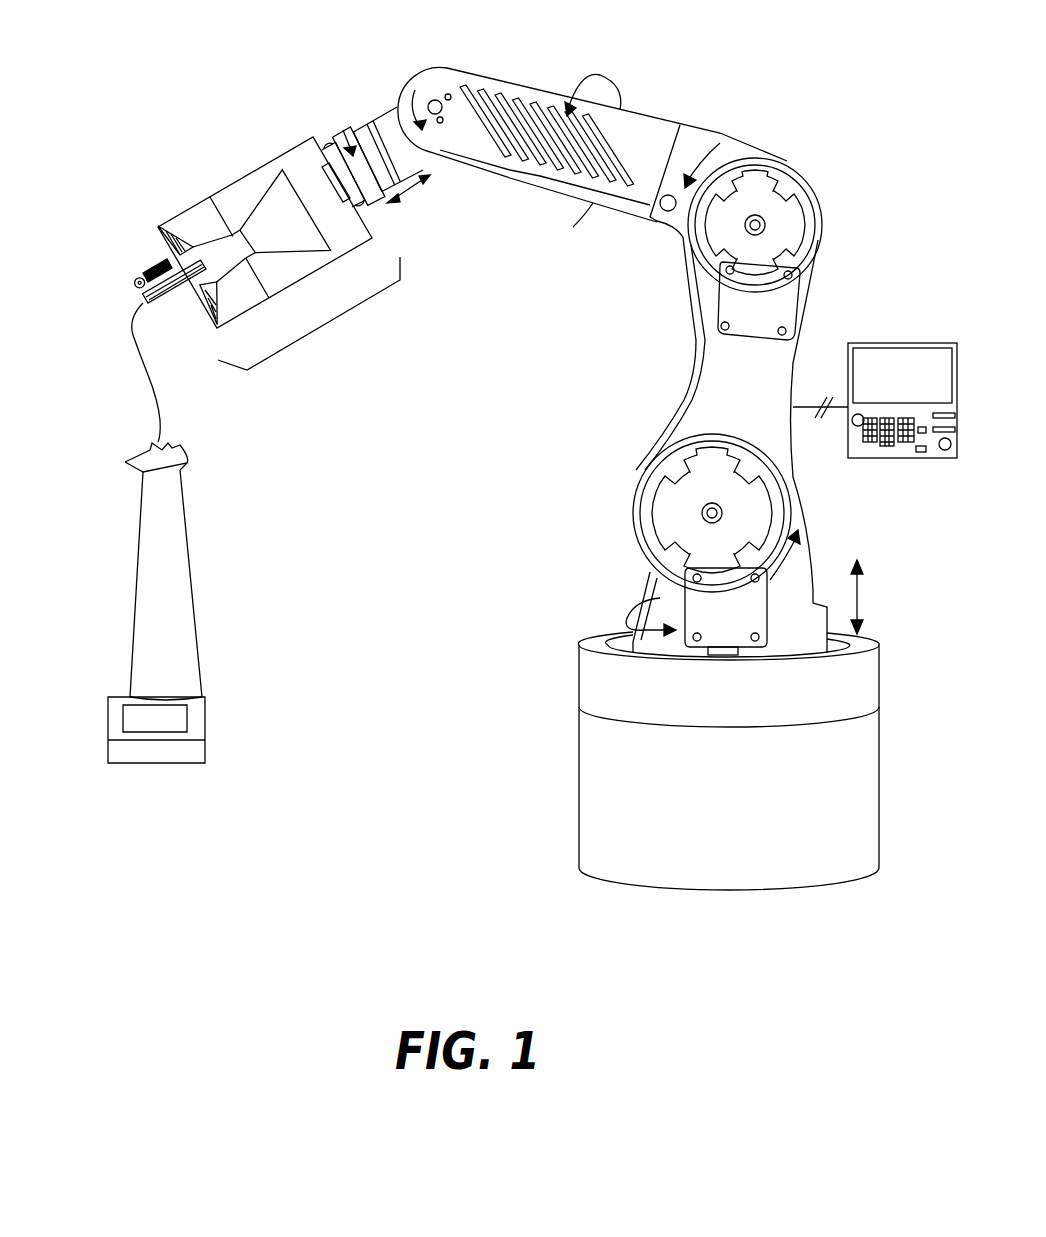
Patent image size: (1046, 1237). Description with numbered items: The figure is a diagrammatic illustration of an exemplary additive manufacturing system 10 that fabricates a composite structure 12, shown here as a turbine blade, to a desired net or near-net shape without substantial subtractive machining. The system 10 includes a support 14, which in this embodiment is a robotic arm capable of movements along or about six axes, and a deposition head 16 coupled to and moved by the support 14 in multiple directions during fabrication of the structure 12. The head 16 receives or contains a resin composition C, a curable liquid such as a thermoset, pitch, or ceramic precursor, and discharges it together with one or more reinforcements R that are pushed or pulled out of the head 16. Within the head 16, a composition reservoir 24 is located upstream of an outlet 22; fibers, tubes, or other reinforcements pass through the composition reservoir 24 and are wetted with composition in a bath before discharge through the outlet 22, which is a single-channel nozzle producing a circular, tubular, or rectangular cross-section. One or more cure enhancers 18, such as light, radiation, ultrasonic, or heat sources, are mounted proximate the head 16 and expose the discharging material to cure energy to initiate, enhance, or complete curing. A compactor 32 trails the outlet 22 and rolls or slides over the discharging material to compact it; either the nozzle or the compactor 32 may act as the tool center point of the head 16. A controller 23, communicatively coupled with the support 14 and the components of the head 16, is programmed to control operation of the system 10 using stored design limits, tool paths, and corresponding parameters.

The additive manufacturing system 10 is at (418, 676).
The composite structure 12 is at (187, 463).
The support 14 is at (759, 402).
The deposition head 16 is at (294, 246).
The cure enhancer 18 is at (172, 248).
The outlet 22 is at (124, 292).
The controller 23 is at (915, 458).
The composition reservoir 24 is at (270, 197).
The compactor 32 is at (145, 276).
The reinforcement R is at (152, 388).
The resin composition C is at (291, 236).